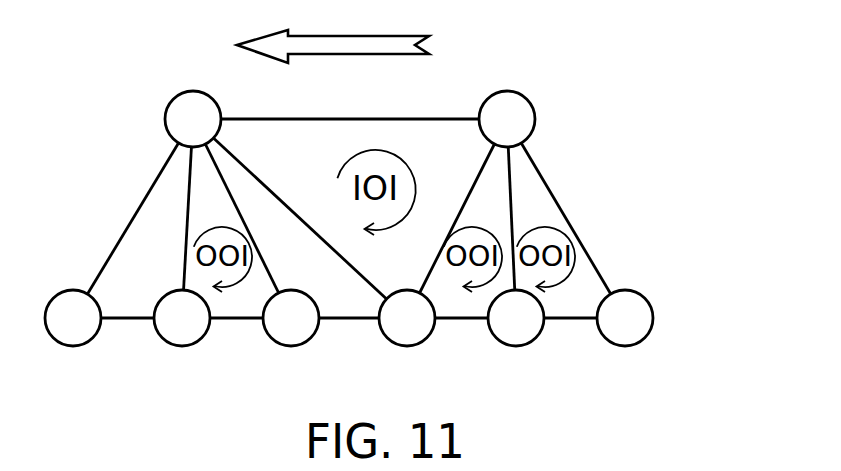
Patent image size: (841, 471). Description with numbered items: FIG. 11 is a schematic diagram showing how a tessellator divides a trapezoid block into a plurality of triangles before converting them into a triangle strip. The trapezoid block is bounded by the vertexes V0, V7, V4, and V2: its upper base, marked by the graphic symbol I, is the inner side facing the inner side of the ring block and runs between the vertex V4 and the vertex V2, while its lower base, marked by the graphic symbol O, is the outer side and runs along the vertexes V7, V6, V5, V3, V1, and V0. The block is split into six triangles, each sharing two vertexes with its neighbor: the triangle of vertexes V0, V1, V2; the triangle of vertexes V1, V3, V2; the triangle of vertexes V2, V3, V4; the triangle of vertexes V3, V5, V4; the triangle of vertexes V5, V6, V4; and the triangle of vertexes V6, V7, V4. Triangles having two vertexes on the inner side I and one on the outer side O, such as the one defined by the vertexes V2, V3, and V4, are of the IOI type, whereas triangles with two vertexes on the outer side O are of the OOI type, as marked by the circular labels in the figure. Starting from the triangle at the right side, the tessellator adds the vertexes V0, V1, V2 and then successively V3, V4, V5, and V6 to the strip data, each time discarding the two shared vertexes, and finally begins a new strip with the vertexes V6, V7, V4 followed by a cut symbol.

The inner side I is at (430, 118).
The outer side O is at (452, 320).
The vertex V0 is at (625, 318).
The vertex V1 is at (516, 318).
The vertex V2 is at (507, 119).
The vertex V3 is at (407, 318).
The vertex V4 is at (193, 119).
The vertex V5 is at (291, 318).
The vertex V6 is at (182, 318).
The vertex V7 is at (73, 318).